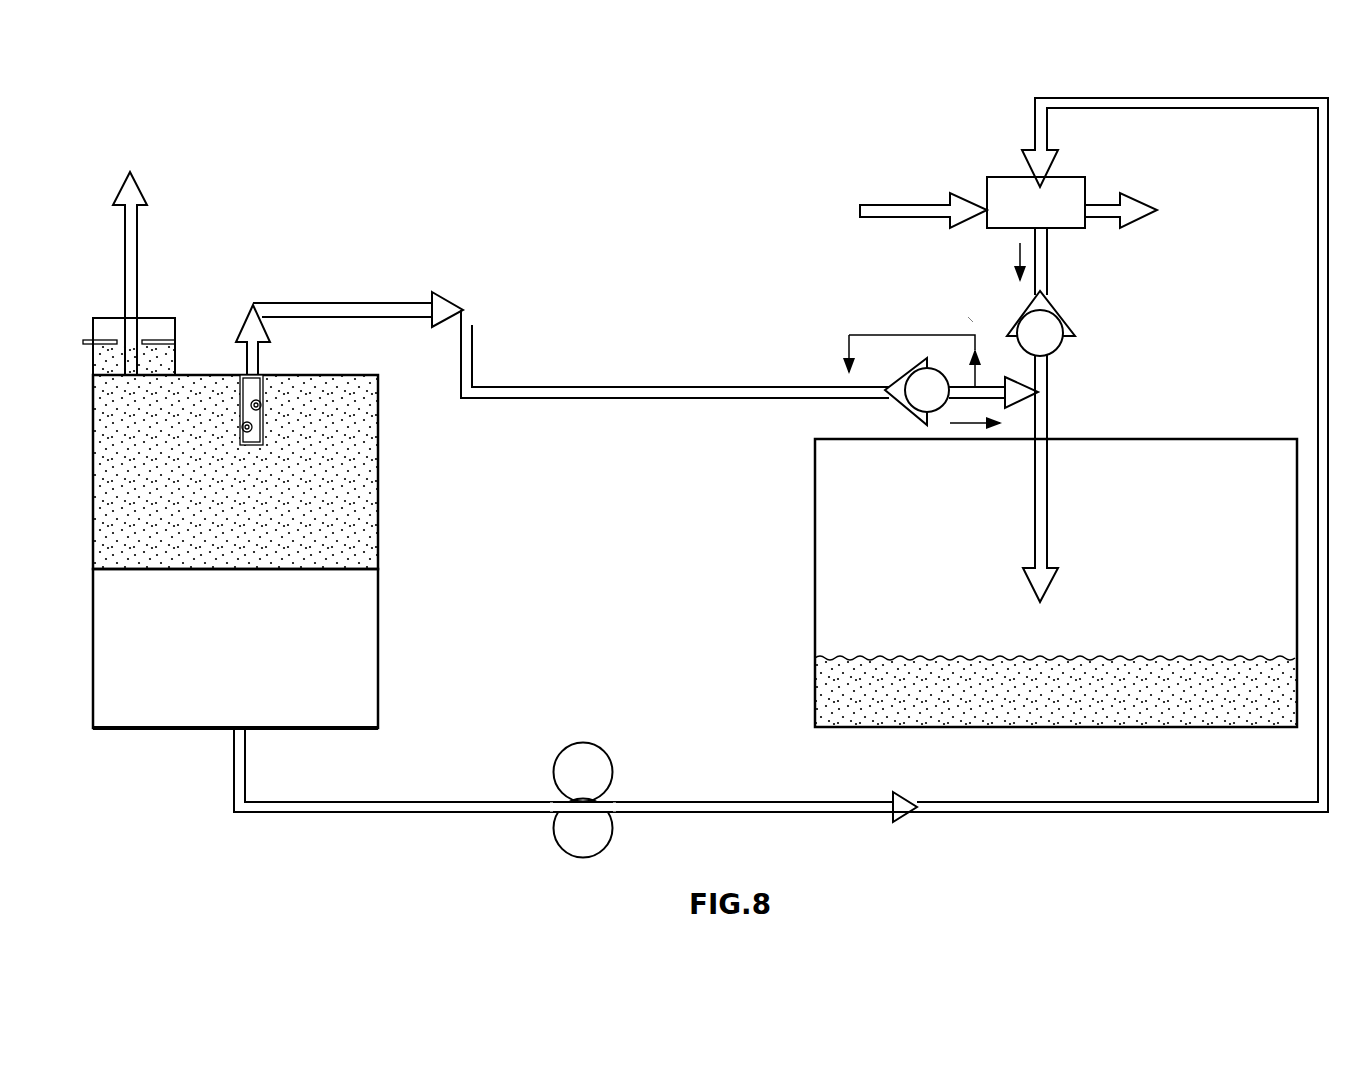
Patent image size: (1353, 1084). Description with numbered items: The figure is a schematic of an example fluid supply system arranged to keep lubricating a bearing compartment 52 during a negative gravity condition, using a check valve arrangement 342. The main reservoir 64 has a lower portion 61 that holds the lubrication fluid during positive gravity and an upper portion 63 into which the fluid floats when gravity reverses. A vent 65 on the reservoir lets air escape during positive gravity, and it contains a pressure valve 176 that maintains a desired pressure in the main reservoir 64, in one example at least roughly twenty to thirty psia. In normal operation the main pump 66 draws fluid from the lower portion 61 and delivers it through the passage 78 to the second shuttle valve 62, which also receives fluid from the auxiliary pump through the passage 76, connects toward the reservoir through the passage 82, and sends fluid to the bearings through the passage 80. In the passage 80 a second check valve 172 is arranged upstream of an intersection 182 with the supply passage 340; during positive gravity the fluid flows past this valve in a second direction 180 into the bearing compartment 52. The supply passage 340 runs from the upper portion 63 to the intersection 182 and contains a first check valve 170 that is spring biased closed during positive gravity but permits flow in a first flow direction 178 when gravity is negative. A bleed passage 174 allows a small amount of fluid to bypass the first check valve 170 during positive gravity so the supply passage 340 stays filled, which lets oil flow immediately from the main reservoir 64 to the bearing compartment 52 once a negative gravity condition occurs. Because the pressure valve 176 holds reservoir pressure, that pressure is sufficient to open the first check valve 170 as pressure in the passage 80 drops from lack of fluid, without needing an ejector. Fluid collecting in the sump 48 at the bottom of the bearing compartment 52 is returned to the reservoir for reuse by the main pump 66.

The sump 48 is at (815, 661).
The bearing compartment 52 is at (1230, 438).
The lower portion 61 is at (378, 658).
The second shuttle valve 62 is at (1075, 177).
The upper portion 63 is at (378, 432).
The main reservoir 64 is at (393, 506).
The vent 65 is at (137, 228).
The main pump 66 is at (622, 757).
The passage 76 is at (895, 218).
The passage 78 is at (690, 800).
The passage 80 is at (1048, 418).
The passage 82 is at (1105, 230).
The first check valve 170 is at (898, 400).
The second check valve 172 is at (1065, 318).
The bleed passage 174 is at (865, 336).
The pressure valve 176 is at (154, 322).
The first flow direction 178 is at (965, 428).
The second direction 180 is at (1015, 262).
The intersection 182 is at (1050, 390).
The supply passage 340 is at (622, 368).
The check valve arrangement 342 is at (965, 312).